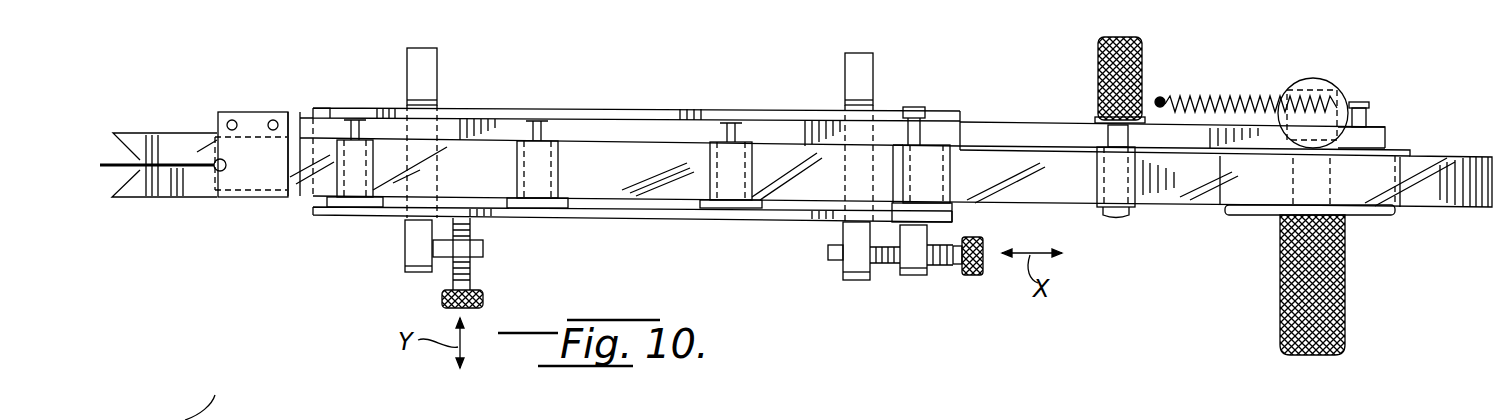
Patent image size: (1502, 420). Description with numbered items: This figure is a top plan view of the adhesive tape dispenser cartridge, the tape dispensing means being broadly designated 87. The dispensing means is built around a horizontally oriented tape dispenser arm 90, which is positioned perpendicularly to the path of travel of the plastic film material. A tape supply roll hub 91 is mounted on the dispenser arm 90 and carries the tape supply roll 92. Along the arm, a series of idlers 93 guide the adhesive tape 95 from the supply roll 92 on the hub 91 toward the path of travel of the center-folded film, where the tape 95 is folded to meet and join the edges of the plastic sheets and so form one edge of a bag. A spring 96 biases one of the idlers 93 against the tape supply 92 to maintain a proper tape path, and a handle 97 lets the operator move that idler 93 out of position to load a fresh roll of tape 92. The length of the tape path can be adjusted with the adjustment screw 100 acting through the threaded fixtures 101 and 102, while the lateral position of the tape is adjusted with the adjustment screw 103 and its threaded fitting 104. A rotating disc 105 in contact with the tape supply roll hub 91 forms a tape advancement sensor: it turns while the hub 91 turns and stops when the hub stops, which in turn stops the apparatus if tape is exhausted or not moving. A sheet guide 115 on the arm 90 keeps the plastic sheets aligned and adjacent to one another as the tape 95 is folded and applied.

The tape dispensing means 87 is at (1115, 273).
The tape dispenser arm 90 is at (1033, 128).
The tape supply roll hub 91 is at (1270, 216).
The tape supply roll 92 is at (1445, 208).
The idlers 93 is at (335, 138).
The adhesive tape 95 is at (768, 155).
The spring 96 is at (1240, 98).
The handle 97 is at (1144, 58).
The adjustment screw 100 is at (973, 277).
The threaded fixture 101 is at (915, 278).
The threaded fixture 102 is at (847, 274).
The adjustment screw 103 is at (442, 298).
The threaded fitting 104 is at (483, 248).
The rotating disc 105 is at (1333, 83).
The sheet guide 115 is at (168, 183).